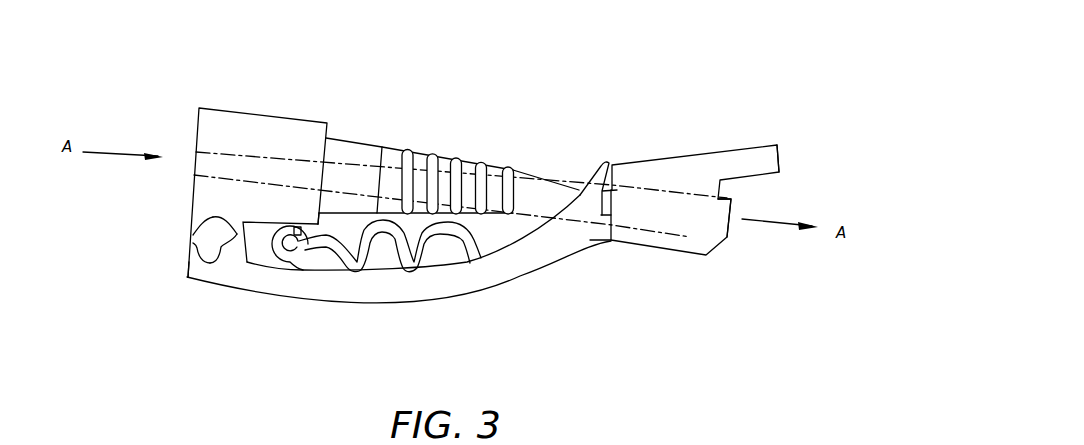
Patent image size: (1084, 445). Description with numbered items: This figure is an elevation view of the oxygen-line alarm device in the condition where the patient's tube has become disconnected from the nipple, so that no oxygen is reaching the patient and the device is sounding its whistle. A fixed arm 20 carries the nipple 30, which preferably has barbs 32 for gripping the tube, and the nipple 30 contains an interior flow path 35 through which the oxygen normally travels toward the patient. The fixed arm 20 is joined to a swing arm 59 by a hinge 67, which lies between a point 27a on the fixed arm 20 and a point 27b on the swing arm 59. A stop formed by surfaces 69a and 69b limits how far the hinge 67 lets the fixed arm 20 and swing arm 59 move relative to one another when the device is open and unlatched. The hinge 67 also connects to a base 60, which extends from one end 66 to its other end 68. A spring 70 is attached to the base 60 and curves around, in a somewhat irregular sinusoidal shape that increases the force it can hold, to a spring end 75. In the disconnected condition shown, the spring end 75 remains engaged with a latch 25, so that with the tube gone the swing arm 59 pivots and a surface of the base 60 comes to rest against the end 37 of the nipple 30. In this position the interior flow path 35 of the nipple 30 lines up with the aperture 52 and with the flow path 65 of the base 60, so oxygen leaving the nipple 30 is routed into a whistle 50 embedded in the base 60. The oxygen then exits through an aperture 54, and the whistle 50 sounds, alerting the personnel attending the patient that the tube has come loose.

The fixed arm 20 is at (228, 122).
The interior flow path 35 is at (338, 177).
The nipple 30 is at (448, 163).
The barbs 32 is at (508, 189).
The aperture 52 is at (565, 200).
The end of nipple 37 is at (605, 162).
The whistle 50 is at (682, 212).
The one end of base 66 is at (780, 157).
The aperture 54 is at (730, 200).
The flow path of base 65 is at (600, 215).
The base 60 is at (398, 303).
The swing arm 59 is at (263, 283).
The hinge 67 is at (258, 223).
The latch 25 is at (296, 214).
The spring end 75 is at (296, 228).
The spring 70 is at (372, 252).
The point on fixed arm 27a is at (237, 232).
The point on swing arm 27b is at (236, 248).
The stop surface 69a is at (193, 235).
The stop surface 69b is at (193, 243).
The other end of base 68 is at (188, 278).